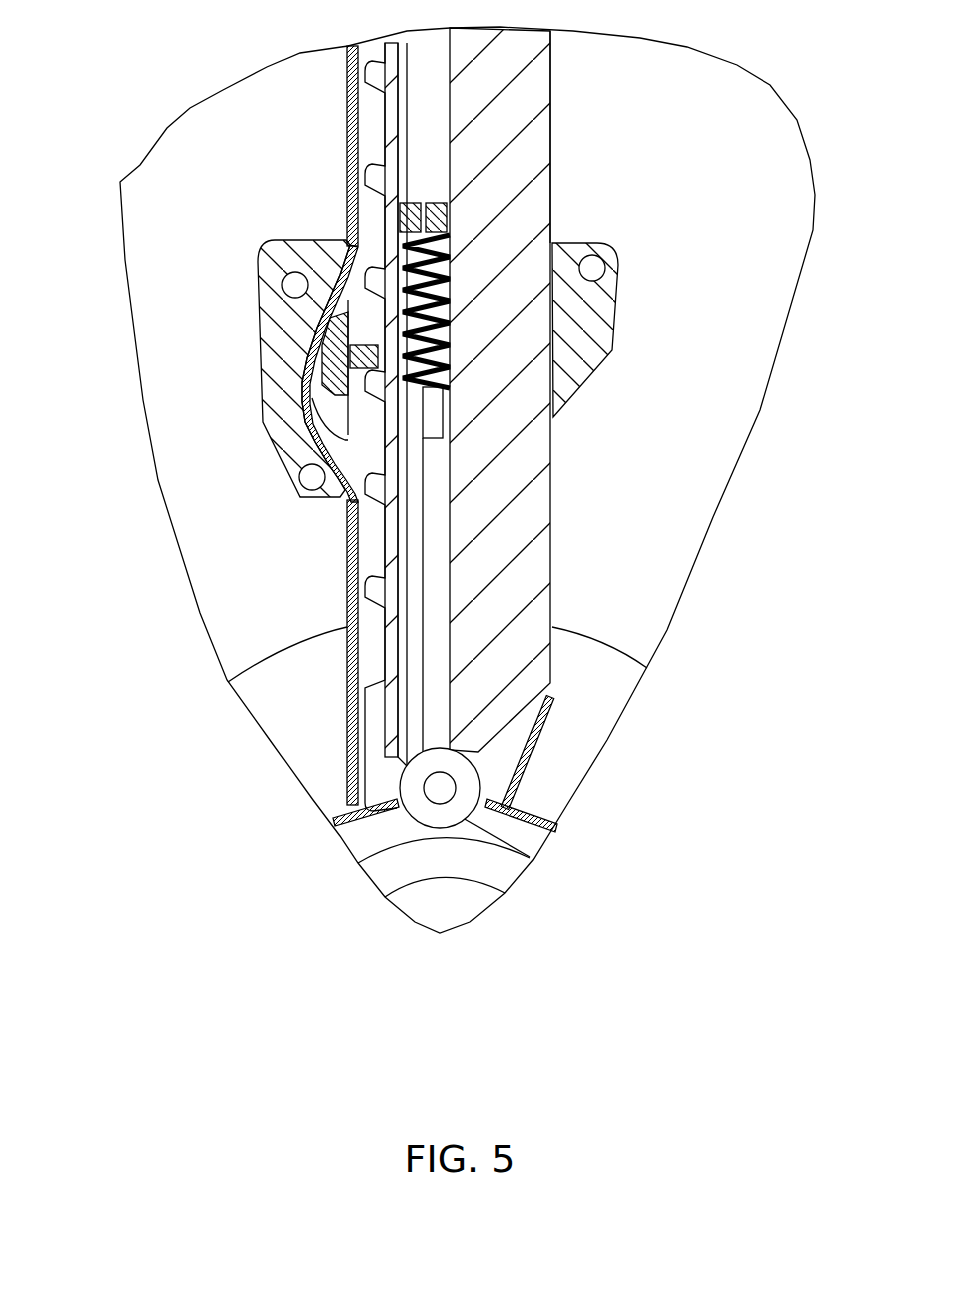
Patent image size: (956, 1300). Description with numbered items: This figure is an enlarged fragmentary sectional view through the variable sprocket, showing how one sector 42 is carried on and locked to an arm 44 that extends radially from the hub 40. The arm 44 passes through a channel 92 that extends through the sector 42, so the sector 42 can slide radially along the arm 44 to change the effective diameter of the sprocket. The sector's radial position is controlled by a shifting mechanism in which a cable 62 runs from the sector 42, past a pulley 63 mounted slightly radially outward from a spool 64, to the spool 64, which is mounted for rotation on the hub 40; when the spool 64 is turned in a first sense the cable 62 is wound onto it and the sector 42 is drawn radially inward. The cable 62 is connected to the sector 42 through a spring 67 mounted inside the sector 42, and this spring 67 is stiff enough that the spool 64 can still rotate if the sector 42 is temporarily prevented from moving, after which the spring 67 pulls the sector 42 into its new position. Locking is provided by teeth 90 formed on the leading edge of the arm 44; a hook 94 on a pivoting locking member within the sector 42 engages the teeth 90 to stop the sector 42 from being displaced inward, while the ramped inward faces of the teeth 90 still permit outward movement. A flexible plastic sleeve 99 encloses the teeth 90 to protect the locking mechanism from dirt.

The hub 40 is at (462, 912).
The sector 42 is at (587, 322).
The arm 44 is at (500, 497).
The cable 62 is at (417, 608).
The pulley 63 is at (410, 790).
The spool 64 is at (485, 857).
The spring 67 is at (457, 293).
The teeth 90 is at (348, 157).
The channel 92 is at (553, 236).
The hook 94 is at (363, 357).
The flexible plastic sleeve 99 is at (347, 218).